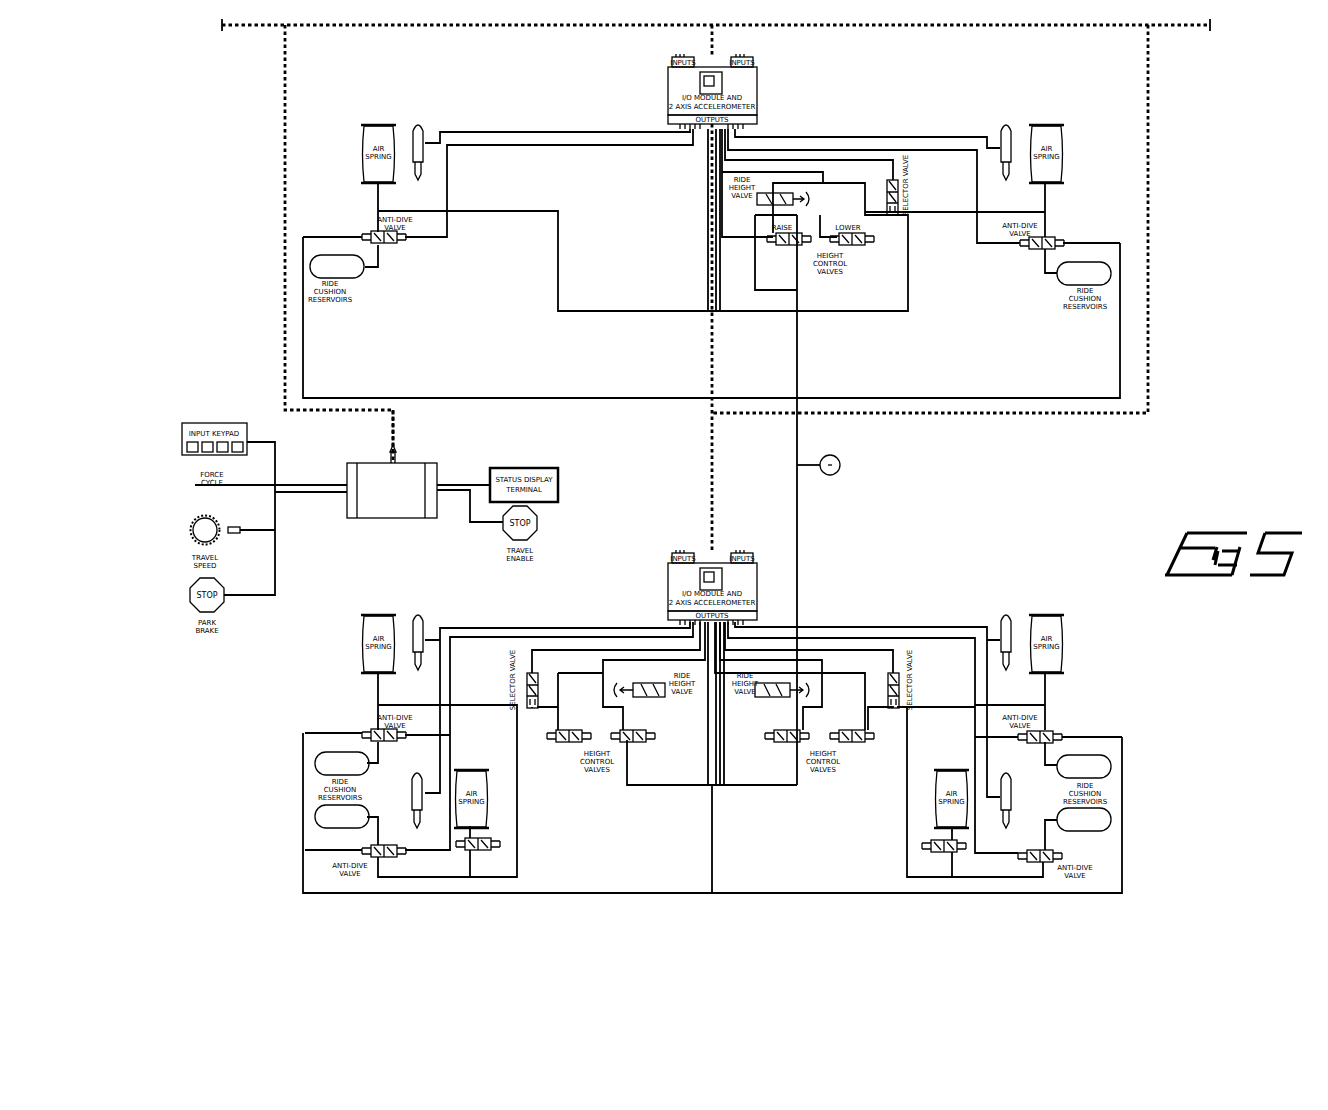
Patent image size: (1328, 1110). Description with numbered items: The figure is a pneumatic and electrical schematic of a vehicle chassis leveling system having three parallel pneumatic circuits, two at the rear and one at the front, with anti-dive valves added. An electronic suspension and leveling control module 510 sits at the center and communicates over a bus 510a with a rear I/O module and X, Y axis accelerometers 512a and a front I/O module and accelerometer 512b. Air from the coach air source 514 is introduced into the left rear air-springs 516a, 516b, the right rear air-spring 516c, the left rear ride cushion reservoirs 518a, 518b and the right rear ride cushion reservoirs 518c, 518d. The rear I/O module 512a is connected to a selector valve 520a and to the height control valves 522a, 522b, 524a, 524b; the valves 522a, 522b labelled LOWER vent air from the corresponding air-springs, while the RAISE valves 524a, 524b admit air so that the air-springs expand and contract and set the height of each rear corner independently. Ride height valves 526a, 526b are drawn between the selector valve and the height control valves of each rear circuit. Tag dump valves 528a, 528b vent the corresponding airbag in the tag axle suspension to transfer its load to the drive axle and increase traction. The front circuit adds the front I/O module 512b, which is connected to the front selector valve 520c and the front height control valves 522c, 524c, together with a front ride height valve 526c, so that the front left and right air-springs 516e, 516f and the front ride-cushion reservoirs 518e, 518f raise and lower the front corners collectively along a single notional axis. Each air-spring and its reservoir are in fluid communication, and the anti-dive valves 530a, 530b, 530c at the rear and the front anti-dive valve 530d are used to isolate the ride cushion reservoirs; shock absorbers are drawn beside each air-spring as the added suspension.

The control module 510 is at (415, 512).
The bus 510a is at (397, 433).
The I/O module and X, Y axis accelerometers 512a is at (682, 580).
The front I/O module and accelerometer 512b is at (683, 83).
The coach air source 514 is at (838, 472).
The left rear air-spring 516a is at (373, 625).
The left rear air-spring 516b is at (947, 808).
The right rear air-spring 516c is at (1055, 635).
The front left air-spring 516e is at (358, 155).
The front right air-spring 516f is at (1060, 143).
The left rear ride cushion reservoir 518a is at (323, 765).
The left rear ride cushion reservoir 518b is at (327, 818).
The right rear ride cushion reservoir 518c is at (1097, 767).
The right rear ride cushion reservoir 518d is at (1097, 818).
The front left ride-cushion reservoir 518e is at (330, 262).
The front right ride-cushion reservoir 518f is at (1100, 270).
The selector valve 520a is at (529, 672).
The front selector valve 520c is at (890, 195).
The height control valve 522a is at (563, 740).
The height control valve 522b is at (853, 741).
The front height control valve 522c is at (868, 247).
The height control valve 524a is at (637, 740).
The height control valve 524b is at (787, 740).
The front height control valve 524c is at (780, 248).
The ride height valve 526a is at (655, 685).
The ride height valve 526b is at (760, 683).
The ride height valve 526c is at (770, 200).
The tag dump valve 528a is at (490, 845).
The tag dump valve 528b is at (935, 848).
The anti-dive valve 530a is at (373, 732).
The anti-dive valve 530b is at (363, 850).
The anti-dive valve 530c is at (1052, 240).
The front left anti-dive valve 530d is at (372, 233).